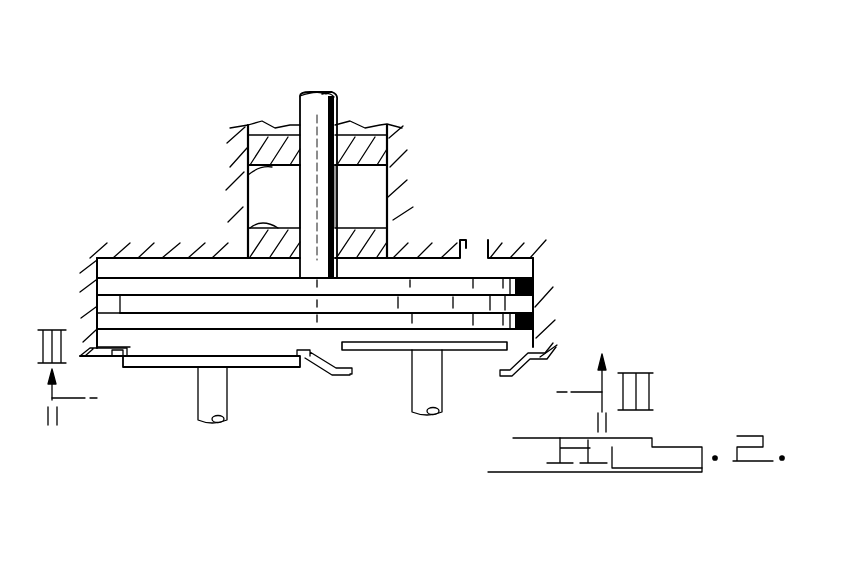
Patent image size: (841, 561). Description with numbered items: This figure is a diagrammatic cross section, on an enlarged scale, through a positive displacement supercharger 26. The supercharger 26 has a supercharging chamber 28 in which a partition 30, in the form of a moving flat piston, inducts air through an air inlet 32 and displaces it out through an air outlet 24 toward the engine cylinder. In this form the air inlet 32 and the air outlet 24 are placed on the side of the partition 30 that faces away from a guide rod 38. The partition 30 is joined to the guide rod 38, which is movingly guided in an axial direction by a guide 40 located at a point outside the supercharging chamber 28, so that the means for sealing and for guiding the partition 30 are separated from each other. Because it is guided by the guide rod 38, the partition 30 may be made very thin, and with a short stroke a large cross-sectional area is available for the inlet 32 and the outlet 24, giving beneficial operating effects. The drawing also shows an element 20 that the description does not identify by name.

The retaining clip 20 is at (485, 372).
The air outlet 24 is at (385, 372).
The positive displacement supercharger 26 is at (440, 252).
The supercharging chamber 28 is at (182, 352).
The partition 30 is at (534, 277).
The air inlet 32 is at (160, 372).
The guide rod 38 is at (335, 113).
The guide 40 is at (278, 228).